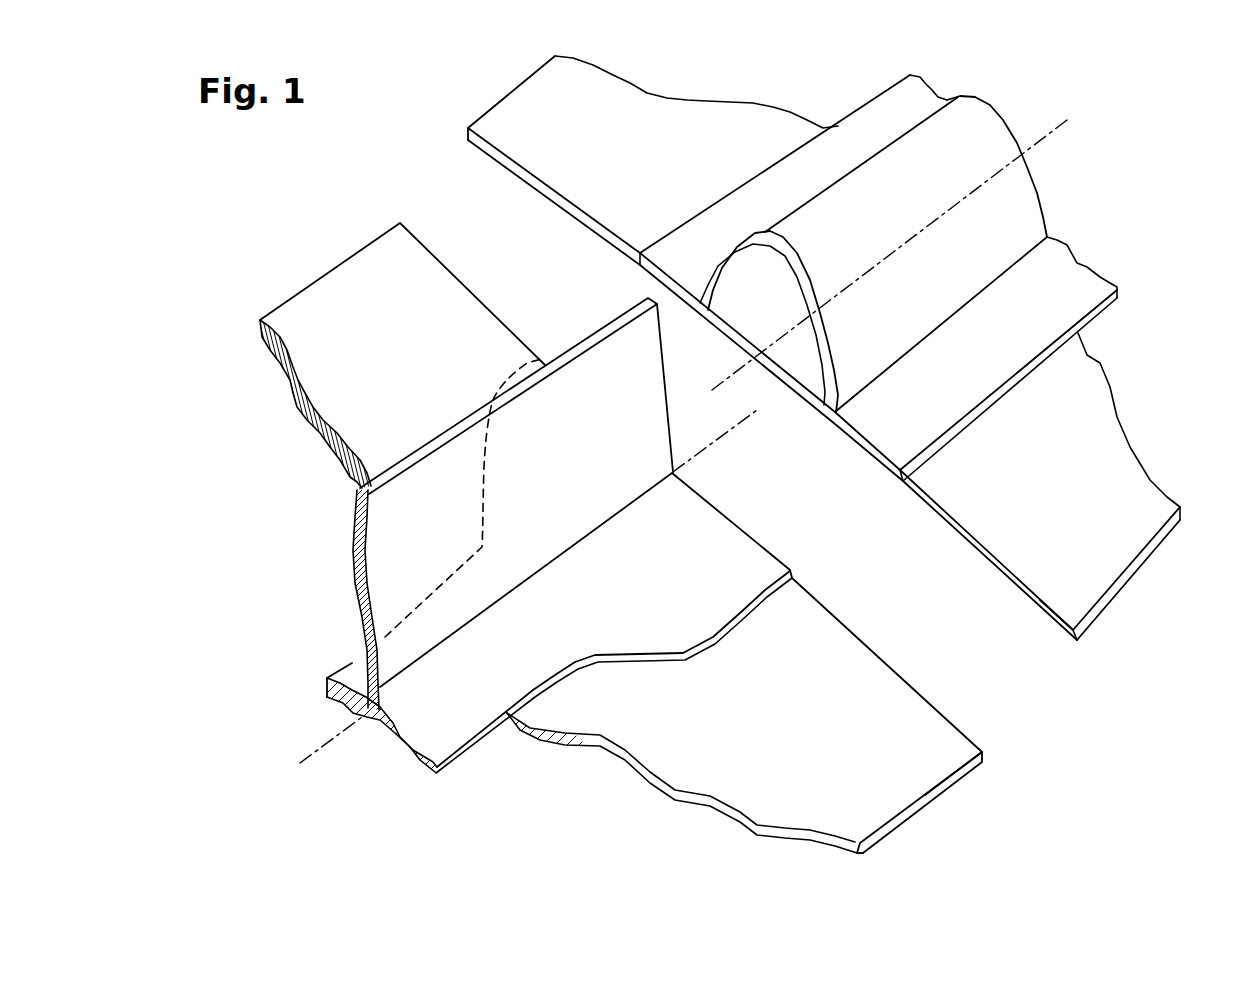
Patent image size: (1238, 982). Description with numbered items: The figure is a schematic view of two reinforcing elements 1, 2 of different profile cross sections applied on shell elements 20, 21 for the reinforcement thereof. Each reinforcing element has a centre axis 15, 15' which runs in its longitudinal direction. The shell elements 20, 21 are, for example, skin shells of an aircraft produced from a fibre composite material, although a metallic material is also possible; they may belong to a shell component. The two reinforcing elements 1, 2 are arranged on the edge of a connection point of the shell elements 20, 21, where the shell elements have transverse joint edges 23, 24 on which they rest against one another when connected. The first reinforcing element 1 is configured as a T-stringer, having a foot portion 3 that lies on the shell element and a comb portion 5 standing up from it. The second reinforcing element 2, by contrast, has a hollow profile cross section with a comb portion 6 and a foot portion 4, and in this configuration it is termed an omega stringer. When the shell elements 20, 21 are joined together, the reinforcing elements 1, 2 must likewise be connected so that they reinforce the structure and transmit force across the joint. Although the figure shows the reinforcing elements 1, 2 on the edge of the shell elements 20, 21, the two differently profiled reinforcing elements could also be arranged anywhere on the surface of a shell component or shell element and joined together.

The first reinforcing element 1 is at (252, 458).
The second reinforcing element 2 is at (1117, 226).
The foot portion 3 is at (542, 363).
The foot portion 4 is at (680, 247).
The comb portion 5 is at (430, 478).
The comb portion 6 is at (850, 183).
The centre axis 15 is at (528, 608).
The centre axis 15' is at (911, 255).
The shell element 20 is at (890, 703).
The shell element 21 is at (1037, 558).
The transverse joint edge 23 is at (958, 725).
The transverse joint edge 24 is at (1058, 625).